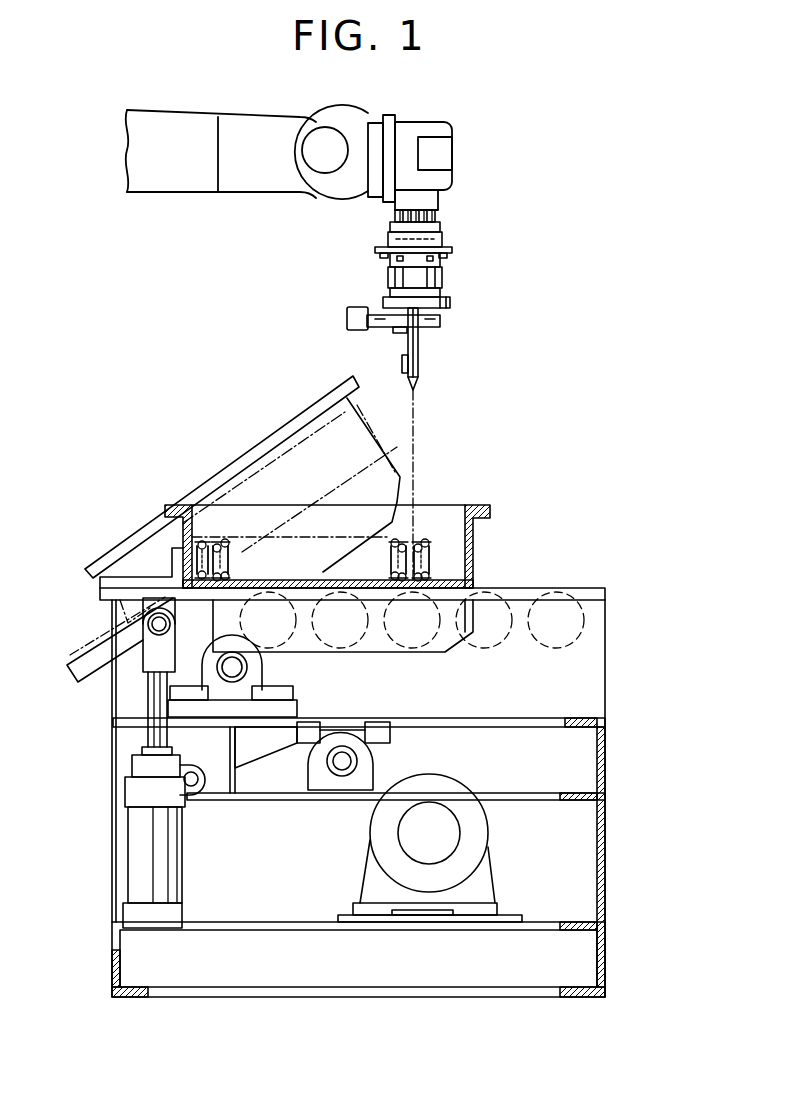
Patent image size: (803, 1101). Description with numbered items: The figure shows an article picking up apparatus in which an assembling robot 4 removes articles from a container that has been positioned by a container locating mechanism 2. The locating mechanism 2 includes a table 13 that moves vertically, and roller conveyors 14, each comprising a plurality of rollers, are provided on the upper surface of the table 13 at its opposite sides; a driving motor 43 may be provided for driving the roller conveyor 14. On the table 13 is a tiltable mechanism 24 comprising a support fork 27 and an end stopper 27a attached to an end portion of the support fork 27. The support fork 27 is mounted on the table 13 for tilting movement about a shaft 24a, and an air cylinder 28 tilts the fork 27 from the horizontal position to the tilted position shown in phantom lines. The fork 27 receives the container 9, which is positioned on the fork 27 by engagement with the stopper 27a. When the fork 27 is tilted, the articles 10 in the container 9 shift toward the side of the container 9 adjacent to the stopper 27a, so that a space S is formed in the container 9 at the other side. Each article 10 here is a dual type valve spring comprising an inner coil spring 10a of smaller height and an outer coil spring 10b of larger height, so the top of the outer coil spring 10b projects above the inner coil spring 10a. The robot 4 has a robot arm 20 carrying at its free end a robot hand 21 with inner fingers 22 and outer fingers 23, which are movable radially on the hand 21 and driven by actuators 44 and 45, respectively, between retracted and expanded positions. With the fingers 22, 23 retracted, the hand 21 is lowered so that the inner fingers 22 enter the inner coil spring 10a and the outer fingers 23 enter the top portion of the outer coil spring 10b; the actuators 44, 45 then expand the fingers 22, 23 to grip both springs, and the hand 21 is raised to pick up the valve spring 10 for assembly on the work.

The container locating mechanism 2 is at (102, 987).
The assembling robot 4 is at (157, 194).
The container 9 is at (490, 510).
The article 10 is at (230, 530).
The inner coil spring 10a is at (207, 533).
The outer coil spring 10b is at (228, 542).
The table 13 is at (605, 760).
The roller conveyor 14 is at (567, 592).
The robot arm 20 is at (256, 112).
The robot hand 21 is at (440, 236).
The inner fingers 22 is at (420, 347).
The outer fingers 23 is at (402, 362).
The tiltable mechanism 24 is at (143, 672).
The shaft 24a is at (240, 667).
The support fork 27 is at (374, 652).
The end stopper 27a is at (153, 572).
The air cylinder 28 is at (128, 823).
The driving motor 43 is at (487, 838).
The actuator 44 is at (440, 290).
The actuator 45 is at (347, 318).
The space S is at (453, 565).